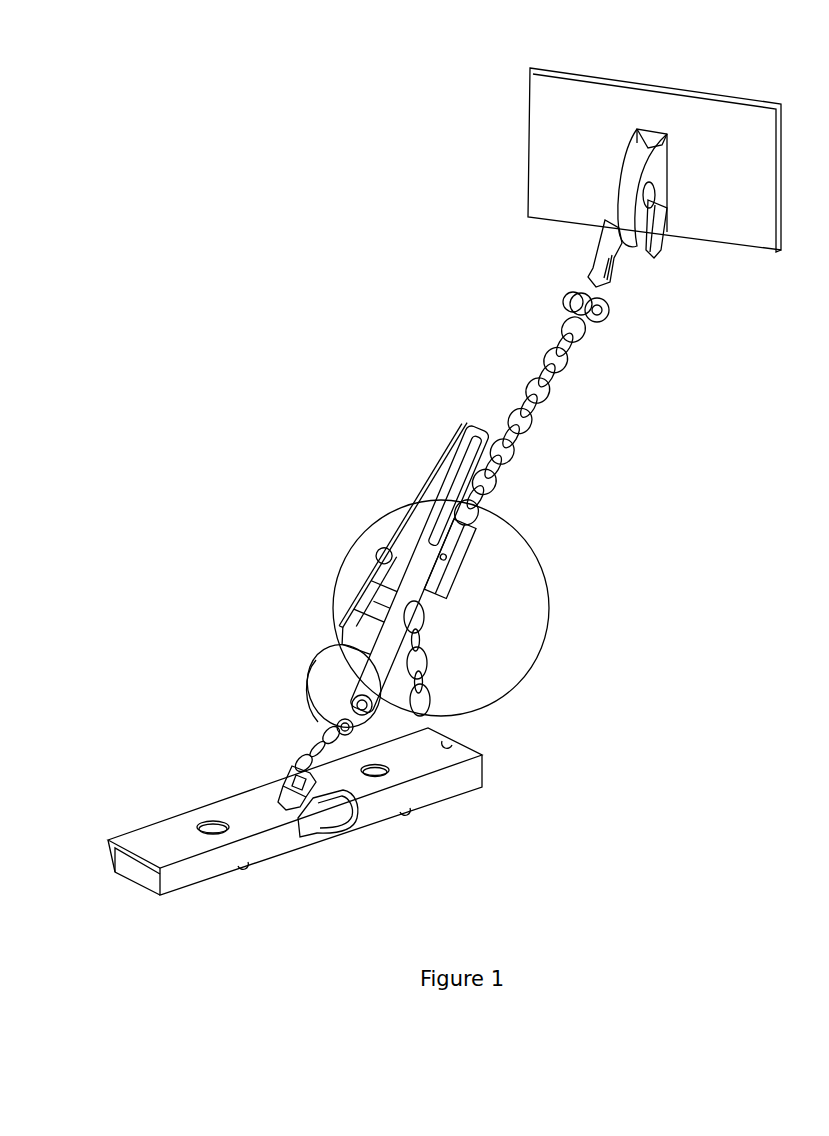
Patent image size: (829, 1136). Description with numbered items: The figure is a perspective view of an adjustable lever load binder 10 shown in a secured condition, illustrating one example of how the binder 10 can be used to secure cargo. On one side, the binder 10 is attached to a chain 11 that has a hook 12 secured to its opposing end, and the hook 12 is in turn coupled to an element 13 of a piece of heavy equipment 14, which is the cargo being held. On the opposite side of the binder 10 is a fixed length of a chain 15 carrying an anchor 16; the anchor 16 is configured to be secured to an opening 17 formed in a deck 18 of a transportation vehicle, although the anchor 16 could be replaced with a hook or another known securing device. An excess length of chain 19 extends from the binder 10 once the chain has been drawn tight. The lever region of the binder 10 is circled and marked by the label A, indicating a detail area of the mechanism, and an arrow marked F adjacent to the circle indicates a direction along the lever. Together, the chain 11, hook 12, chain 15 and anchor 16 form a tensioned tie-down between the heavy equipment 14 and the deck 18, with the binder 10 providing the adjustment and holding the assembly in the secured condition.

The adjustable lever load binder 10 is at (383, 570).
The chain 11 is at (543, 421).
The hook 12 is at (534, 271).
The element 13 is at (630, 177).
The piece of heavy equipment 14 is at (710, 135).
The chain 15 is at (307, 770).
The anchor 16 is at (278, 793).
The opening 17 is at (215, 830).
The deck 18 is at (193, 842).
The excess length of chain 19 is at (458, 658).
The detail area A is at (322, 549).
The force direction F is at (548, 592).